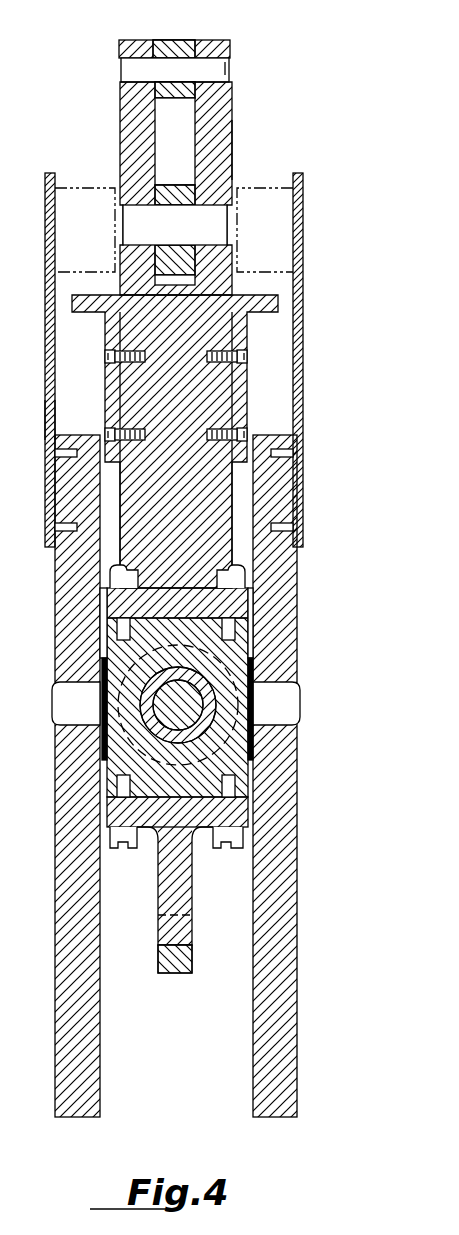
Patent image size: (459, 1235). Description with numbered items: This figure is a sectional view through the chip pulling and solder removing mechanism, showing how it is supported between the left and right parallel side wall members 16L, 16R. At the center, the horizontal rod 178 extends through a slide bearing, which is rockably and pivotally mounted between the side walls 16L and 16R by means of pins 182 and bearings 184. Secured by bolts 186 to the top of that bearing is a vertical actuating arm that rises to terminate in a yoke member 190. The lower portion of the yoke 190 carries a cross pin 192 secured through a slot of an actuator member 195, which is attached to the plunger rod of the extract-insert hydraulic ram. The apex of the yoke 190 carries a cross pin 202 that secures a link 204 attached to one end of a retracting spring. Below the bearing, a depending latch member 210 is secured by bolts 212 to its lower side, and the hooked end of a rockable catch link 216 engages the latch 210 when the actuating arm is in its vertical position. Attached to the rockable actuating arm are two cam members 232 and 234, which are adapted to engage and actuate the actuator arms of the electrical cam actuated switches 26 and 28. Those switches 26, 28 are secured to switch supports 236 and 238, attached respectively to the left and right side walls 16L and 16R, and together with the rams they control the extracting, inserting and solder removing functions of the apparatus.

The link 204 is at (173, 50).
The cross pin 202 is at (218, 70).
The yoke member 190 is at (218, 124).
The cross pin 192 is at (140, 218).
The actuator member 195 is at (232, 150).
The electrical cam actuated switch 26 is at (88, 186).
The electrical cam actuated switch 28 is at (258, 186).
The switch support 238 is at (302, 174).
The switch support 236 is at (47, 421).
The cam member 232 is at (105, 373).
The cam member 234 is at (243, 376).
The bolts 186 is at (114, 570).
The horizontal rod 178 is at (186, 697).
The pins 182 is at (60, 705).
The bearings 184 is at (100, 738).
The bolts 212 is at (130, 845).
The depending latch member 210 is at (165, 899).
The rockable catch link 216 is at (175, 968).
The right side wall member 16R is at (100, 1108).
The left side wall member 16L is at (253, 1103).